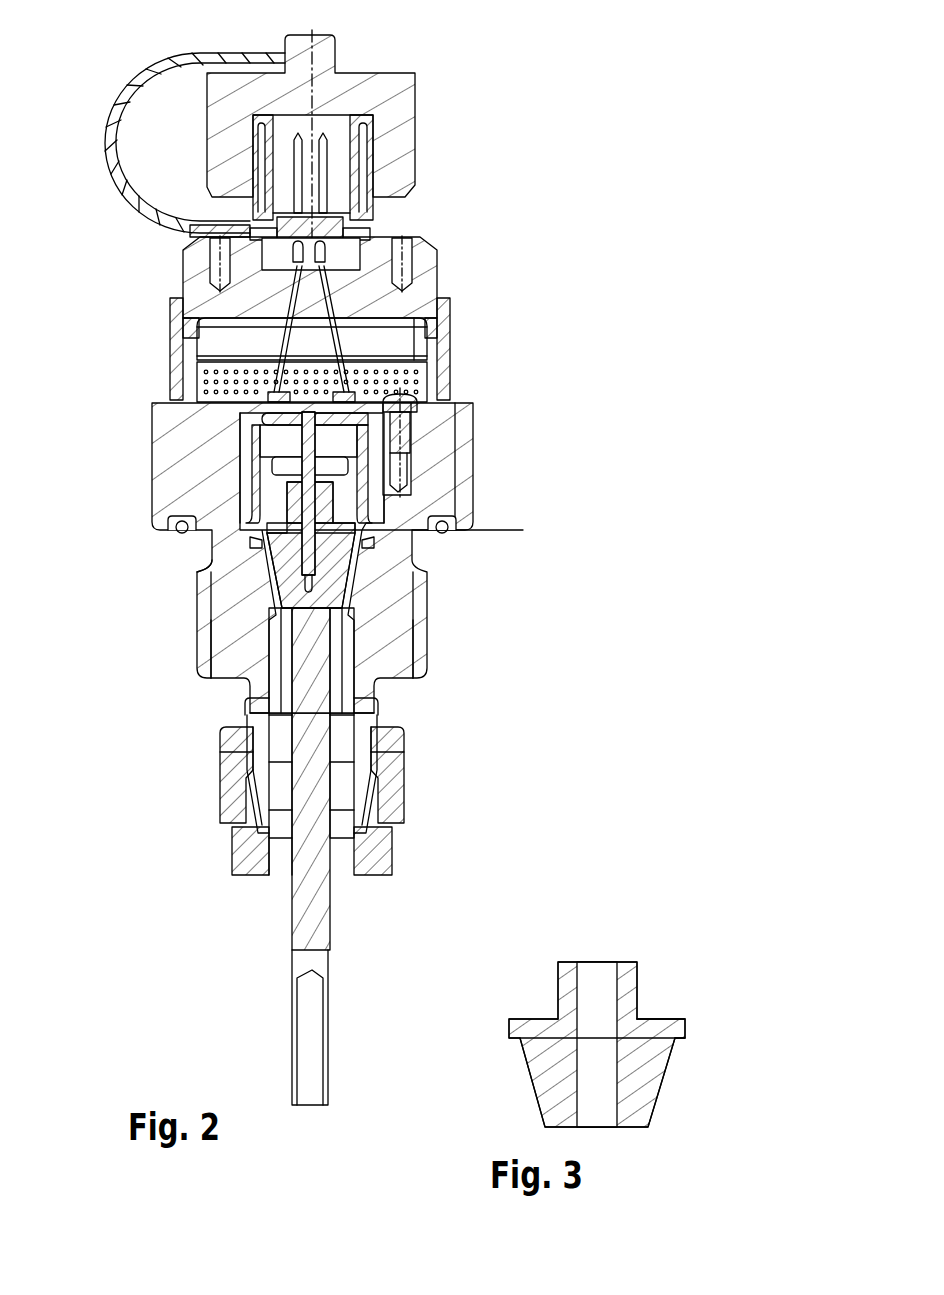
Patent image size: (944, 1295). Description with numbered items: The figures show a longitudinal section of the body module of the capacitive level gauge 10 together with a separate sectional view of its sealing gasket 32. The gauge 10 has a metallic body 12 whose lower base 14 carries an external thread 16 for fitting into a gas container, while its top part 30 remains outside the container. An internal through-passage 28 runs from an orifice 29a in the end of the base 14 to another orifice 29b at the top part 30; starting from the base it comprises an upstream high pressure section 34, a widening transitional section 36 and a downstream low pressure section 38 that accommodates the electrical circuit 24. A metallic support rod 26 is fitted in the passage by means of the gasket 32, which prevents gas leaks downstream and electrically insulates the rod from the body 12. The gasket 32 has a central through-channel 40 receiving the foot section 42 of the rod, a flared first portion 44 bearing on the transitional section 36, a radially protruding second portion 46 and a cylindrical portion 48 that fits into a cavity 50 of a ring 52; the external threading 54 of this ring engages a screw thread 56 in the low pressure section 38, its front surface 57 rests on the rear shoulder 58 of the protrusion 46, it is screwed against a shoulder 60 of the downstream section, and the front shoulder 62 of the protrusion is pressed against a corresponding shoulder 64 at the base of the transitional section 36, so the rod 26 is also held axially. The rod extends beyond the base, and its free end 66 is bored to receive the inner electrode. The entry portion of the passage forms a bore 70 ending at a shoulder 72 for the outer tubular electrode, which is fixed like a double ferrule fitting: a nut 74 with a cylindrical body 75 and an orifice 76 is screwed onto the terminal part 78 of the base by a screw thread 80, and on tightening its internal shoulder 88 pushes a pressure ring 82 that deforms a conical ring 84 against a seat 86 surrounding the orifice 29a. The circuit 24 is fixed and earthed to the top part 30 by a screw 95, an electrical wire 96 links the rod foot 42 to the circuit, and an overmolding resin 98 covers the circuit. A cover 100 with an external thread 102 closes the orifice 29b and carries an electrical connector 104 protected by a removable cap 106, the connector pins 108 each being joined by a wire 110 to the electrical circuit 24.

In FIG. 2, the gauge 10 is at (448, 45).
In FIG. 2, the body 12 is at (162, 515).
In FIG. 2, the base 14 is at (473, 631).
In FIG. 2, the external thread 16 is at (203, 596).
In FIG. 2, the electrical circuit 24 is at (200, 381).
In FIG. 2, the metallic support rod 26 is at (312, 692).
In FIG. 2, the internal through-passage 28 is at (218, 619).
In FIG. 2, the orifice 29a is at (248, 760).
In FIG. 2, the orifice 29b is at (225, 269).
In FIG. 2, the top part 30 is at (488, 226).
In FIG. 3, the gasket 32 is at (602, 997).
In FIG. 2, the upstream section 34 is at (355, 661).
In FIG. 2, the transitional section 36 is at (210, 562).
In FIG. 2, the low pressure section 38 is at (256, 440).
In FIG. 3, the central channel 40 is at (580, 990).
In FIG. 2, the foot section 42 is at (320, 492).
In FIG. 2, the first portion 44 is at (342, 592).
In FIG. 3, the first portion 44 is at (540, 1092).
In FIG. 2, the second portion 46 is at (292, 523).
In FIG. 3, the second portion 46 is at (512, 1027).
In FIG. 2, the cylindrical portion 48 is at (340, 512).
In FIG. 3, the cylindrical portion 48 is at (560, 985).
In FIG. 2, the cavity 50 is at (290, 463).
In FIG. 2, the ring 52 is at (262, 416).
In FIG. 2, the external threading 54 is at (402, 472).
In FIG. 2, the screw thread 56 is at (402, 441).
In FIG. 2, the front surface 57 is at (336, 562).
In FIG. 3, the rear shoulder 58 is at (665, 1018).
In FIG. 2, the shoulder 60 is at (180, 520).
In FIG. 3, the front shoulder 62 is at (688, 1044).
In FIG. 2, the shoulder 64 is at (356, 546).
In FIG. 2, the end 66 is at (262, 1052).
In FIG. 2, the bore 70 is at (290, 650).
In FIG. 2, the shoulder 72 is at (270, 700).
In FIG. 2, the nut 74 is at (432, 790).
In FIG. 2, the cylindrical body 75 is at (395, 762).
In FIG. 2, the orifice 76 is at (285, 866).
In FIG. 2, the terminal part 78 is at (245, 735).
In FIG. 2, the screw thread 80 is at (380, 742).
In FIG. 2, the pressure ring 82 is at (246, 830).
In FIG. 2, the conical ring 84 is at (258, 800).
In FIG. 2, the seat 86 is at (358, 806).
In FIG. 2, the internal shoulder 88 is at (366, 830).
In FIG. 2, the screw 95 is at (458, 405).
In FIG. 2, the electrical wire 96 is at (250, 427).
In FIG. 2, the overmolding resin 98 is at (408, 345).
In FIG. 2, the cover 100 is at (428, 262).
In FIG. 2, the external thread 102 is at (438, 318).
In FIG. 2, the electrical connector 104 is at (365, 147).
In FIG. 2, the removable cap 106 is at (398, 92).
In FIG. 2, the pins 108 is at (323, 167).
In FIG. 2, the wire 110 is at (190, 338).